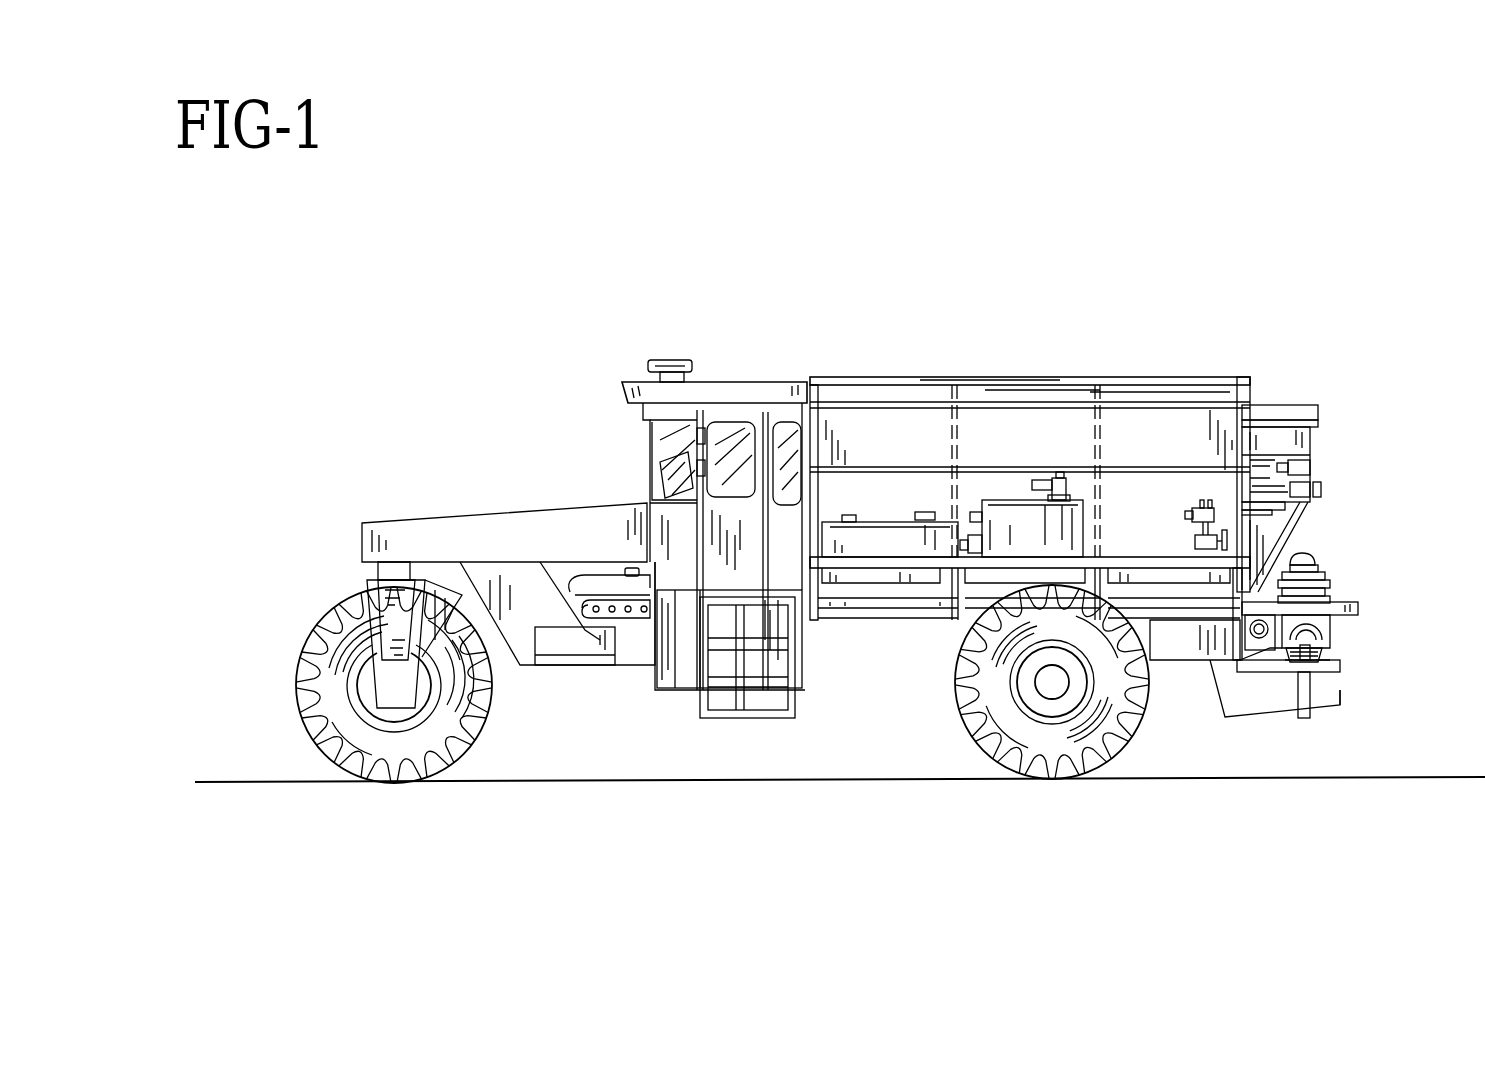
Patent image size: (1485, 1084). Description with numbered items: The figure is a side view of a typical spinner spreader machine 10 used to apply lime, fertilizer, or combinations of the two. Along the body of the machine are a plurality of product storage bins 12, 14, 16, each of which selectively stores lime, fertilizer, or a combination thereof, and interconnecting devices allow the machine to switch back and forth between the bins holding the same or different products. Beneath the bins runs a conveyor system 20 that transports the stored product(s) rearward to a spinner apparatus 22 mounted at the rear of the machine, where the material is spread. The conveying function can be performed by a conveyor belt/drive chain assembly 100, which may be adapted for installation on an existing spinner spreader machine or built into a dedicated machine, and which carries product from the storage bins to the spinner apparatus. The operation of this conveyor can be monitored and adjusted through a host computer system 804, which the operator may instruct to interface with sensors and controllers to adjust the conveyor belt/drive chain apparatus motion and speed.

The spinner spreader machine 10 is at (407, 358).
The product storage bin 12 is at (873, 393).
The product storage bin 14 is at (1040, 390).
The product storage bin 16 is at (1197, 390).
The conveyor system 20 is at (985, 590).
The spinner apparatus 22 is at (1348, 667).
The conveyor belt/drive chain assembly 100 is at (828, 603).
The host computer system 804 is at (660, 468).